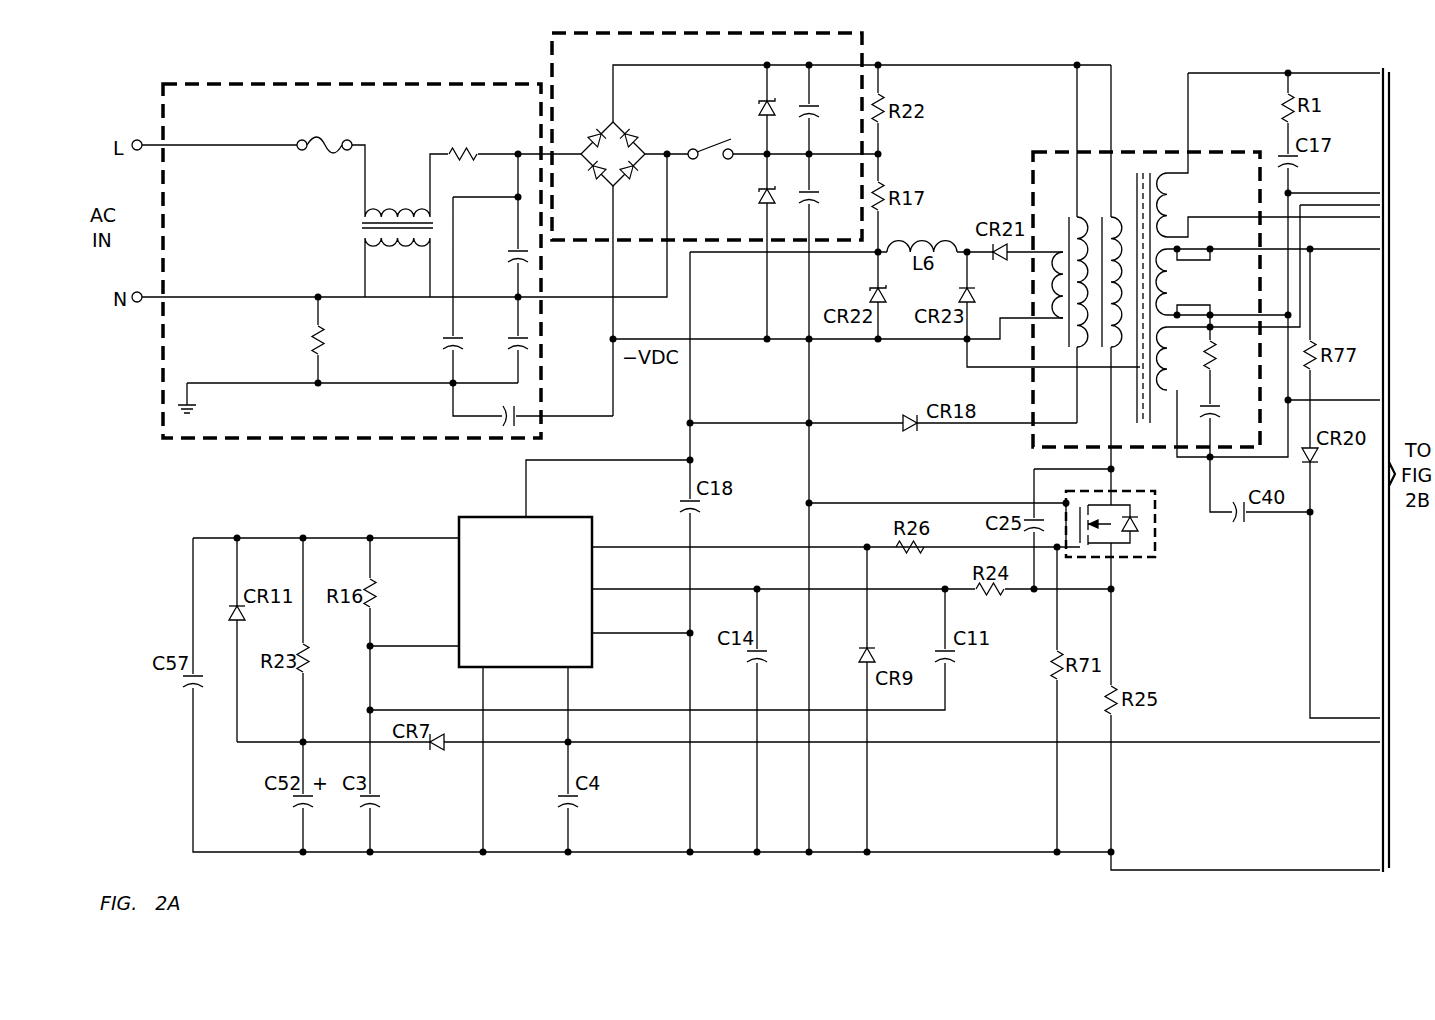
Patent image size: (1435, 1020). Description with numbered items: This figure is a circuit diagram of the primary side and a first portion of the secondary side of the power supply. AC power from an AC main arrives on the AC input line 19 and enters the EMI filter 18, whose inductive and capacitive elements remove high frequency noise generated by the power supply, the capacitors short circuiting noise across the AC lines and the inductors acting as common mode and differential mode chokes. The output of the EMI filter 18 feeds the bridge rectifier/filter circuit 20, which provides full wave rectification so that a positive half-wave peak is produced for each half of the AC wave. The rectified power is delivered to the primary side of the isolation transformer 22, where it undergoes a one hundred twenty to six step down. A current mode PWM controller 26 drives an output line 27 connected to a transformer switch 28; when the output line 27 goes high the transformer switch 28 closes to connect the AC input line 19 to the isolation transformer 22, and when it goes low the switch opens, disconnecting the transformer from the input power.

The EMI filter 18 is at (248, 440).
The AC input line 19 is at (228, 145).
The bridge rectifier/filter circuit 20 is at (549, 77).
The isolation transformer 22 is at (1147, 152).
The PWM controller 26 is at (514, 641).
The output line 27 is at (758, 546).
The transformer switch 28 is at (1155, 528).